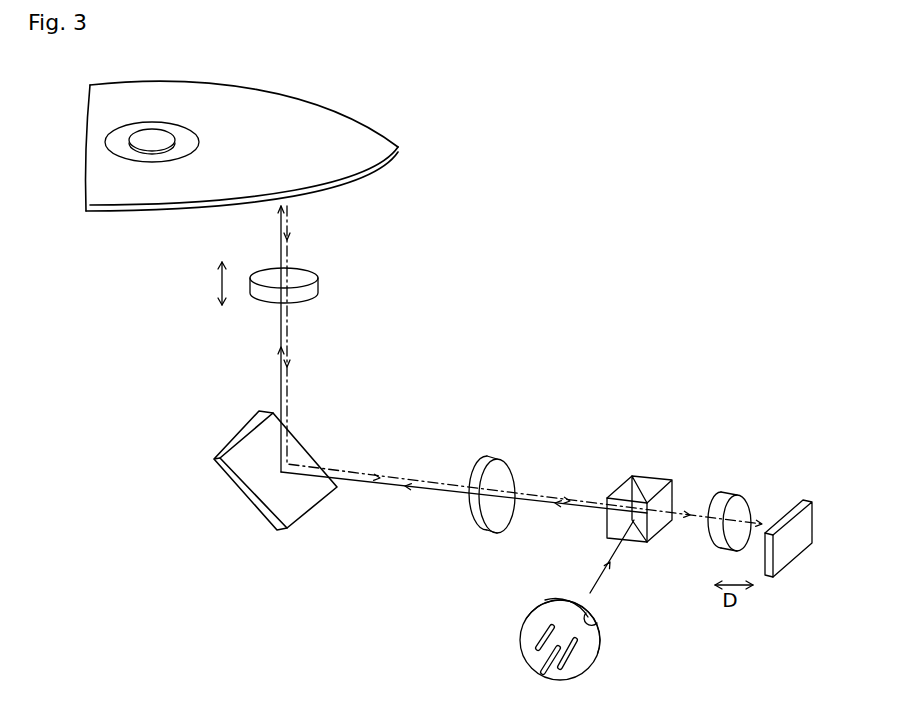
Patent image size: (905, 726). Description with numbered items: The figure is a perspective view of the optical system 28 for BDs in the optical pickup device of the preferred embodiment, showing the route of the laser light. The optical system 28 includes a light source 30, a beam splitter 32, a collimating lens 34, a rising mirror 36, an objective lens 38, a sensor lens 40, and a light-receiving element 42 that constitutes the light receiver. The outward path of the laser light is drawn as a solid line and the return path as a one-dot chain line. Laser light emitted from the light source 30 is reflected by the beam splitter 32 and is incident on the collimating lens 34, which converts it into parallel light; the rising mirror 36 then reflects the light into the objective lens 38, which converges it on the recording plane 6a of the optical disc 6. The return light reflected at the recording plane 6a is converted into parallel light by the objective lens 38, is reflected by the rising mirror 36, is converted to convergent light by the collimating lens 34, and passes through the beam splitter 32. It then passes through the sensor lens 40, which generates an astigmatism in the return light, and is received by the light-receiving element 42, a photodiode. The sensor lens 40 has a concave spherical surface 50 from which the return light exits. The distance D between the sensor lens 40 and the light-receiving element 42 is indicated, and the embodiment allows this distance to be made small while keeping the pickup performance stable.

The optical disc 6 is at (323, 108).
The recording plane 6a is at (343, 162).
The optical system 28 is at (573, 368).
The light source 30 is at (585, 655).
The beam splitter 32 is at (648, 481).
The collimating lens 34 is at (502, 472).
The rising mirror 36 is at (300, 453).
The objective lens 38 is at (313, 288).
The sensor lens 40 is at (727, 502).
The light-receiving element 42 is at (803, 527).
The spherical surface 50 is at (743, 513).